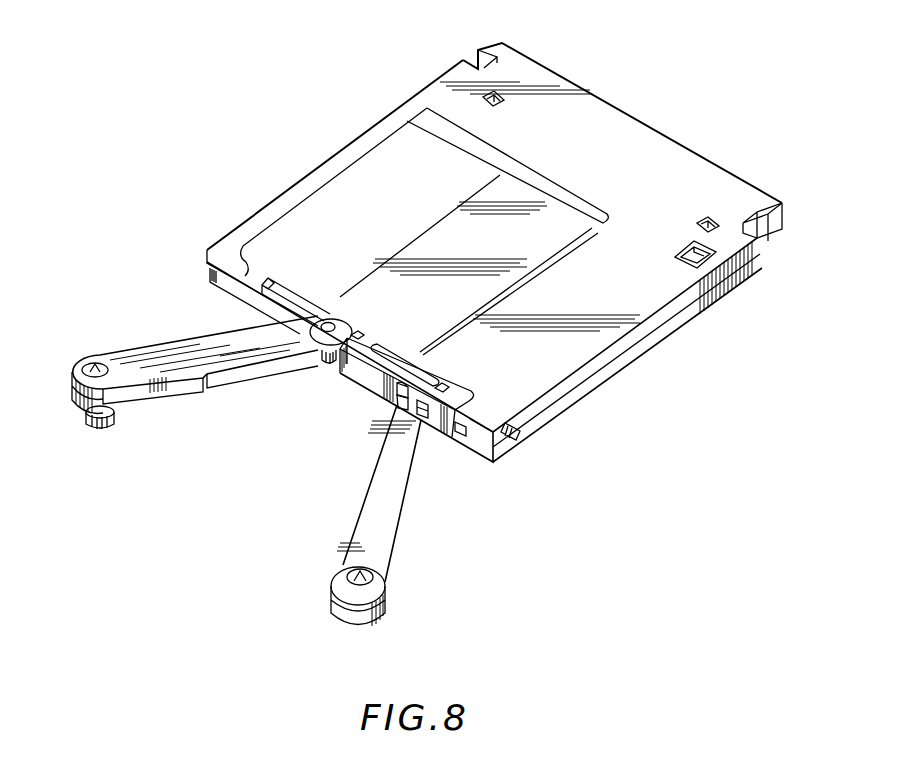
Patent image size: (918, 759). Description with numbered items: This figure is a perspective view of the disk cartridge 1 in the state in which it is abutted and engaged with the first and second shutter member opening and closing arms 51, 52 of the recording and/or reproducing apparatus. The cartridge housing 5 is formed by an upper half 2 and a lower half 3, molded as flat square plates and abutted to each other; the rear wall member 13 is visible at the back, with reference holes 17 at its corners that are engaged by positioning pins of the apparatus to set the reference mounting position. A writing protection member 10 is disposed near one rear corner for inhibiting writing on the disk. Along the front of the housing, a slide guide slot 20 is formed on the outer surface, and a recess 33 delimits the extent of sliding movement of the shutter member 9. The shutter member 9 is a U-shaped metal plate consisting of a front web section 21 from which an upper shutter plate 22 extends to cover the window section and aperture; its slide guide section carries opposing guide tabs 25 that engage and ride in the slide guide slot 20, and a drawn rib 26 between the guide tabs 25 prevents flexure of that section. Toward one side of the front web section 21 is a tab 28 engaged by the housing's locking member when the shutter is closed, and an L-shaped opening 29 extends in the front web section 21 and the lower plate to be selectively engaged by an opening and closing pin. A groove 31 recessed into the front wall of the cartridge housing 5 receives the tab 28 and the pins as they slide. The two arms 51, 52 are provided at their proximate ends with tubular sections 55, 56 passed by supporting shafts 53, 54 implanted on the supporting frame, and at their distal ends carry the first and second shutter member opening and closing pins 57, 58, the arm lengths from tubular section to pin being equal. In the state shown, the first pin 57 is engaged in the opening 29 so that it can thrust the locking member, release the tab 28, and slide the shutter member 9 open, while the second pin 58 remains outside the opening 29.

The disk cartridge 1 is at (440, 90).
The upper half 2 is at (670, 308).
The lower half 3 is at (658, 332).
The cartridge housing 5 is at (716, 336).
The shutter member 9 is at (527, 272).
The protection member 10 is at (700, 267).
The rear wall member 13 is at (608, 110).
The reference hole 17 is at (493, 95).
The slide guide slot 20 is at (295, 285).
The front web section 21 is at (358, 368).
The upper shutter plate 22 is at (547, 250).
The guide tab 25 is at (361, 333).
The rib 26 is at (397, 356).
The tab 28 is at (419, 421).
The opening 29 is at (397, 389).
The groove 31 is at (461, 441).
The recess 33 is at (337, 175).
The first shutter member opening and closing arm 51 is at (395, 507).
The second shutter member opening and closing arm 52 is at (180, 343).
The supporting shaft 53 is at (347, 582).
The supporting shaft 54 is at (93, 366).
The tubular section 55 is at (352, 600).
The tubular section 56 is at (103, 428).
The first shutter member opening and closing pin 57 is at (400, 401).
The second shutter member opening and closing pin 58 is at (327, 356).